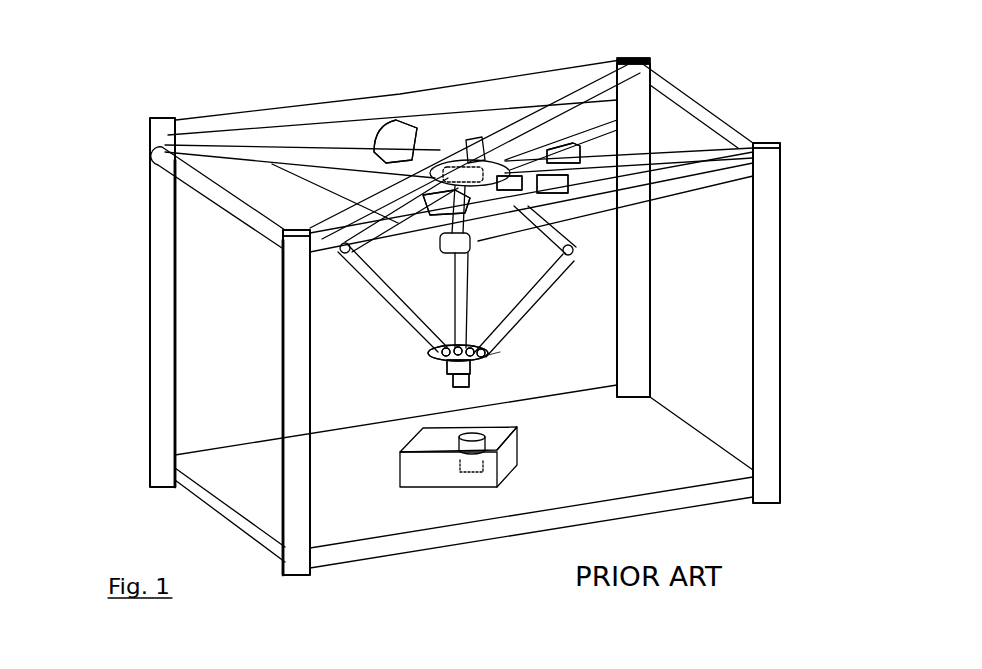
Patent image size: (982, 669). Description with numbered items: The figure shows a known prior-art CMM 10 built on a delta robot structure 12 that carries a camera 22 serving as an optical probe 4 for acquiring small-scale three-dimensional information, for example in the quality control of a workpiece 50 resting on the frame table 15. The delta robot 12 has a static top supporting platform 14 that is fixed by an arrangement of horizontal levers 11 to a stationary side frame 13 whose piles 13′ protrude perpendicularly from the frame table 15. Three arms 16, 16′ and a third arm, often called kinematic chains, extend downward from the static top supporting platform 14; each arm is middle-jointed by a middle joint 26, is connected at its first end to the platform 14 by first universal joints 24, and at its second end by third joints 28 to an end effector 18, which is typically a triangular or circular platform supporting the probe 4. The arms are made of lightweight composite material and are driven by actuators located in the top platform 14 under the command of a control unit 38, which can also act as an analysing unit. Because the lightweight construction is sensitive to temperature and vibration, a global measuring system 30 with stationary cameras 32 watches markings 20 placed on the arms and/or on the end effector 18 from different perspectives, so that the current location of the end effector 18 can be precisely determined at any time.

The CMM 10 is at (687, 75).
The delta robot structure 12 is at (465, 296).
The horizontal levers 11 is at (343, 148).
The side frame 13 is at (787, 200).
The piles 13′ is at (160, 306).
The static top supporting platform 14 is at (489, 153).
The frame table 15 is at (645, 479).
The arm 16 is at (548, 296).
The arm 16′ is at (455, 303).
The end effector 18 is at (505, 345).
The markings 20 is at (518, 339).
The first universal joints 24 is at (508, 160).
The middle joints 26 is at (572, 250).
The third joints 28 is at (500, 352).
The global measuring system 30 is at (398, 125).
The stationary cameras 32 is at (472, 136).
The control unit 38 is at (461, 160).
The optical probe 4 is at (480, 364).
The camera 22 is at (522, 370).
The workpiece 50 is at (437, 437).